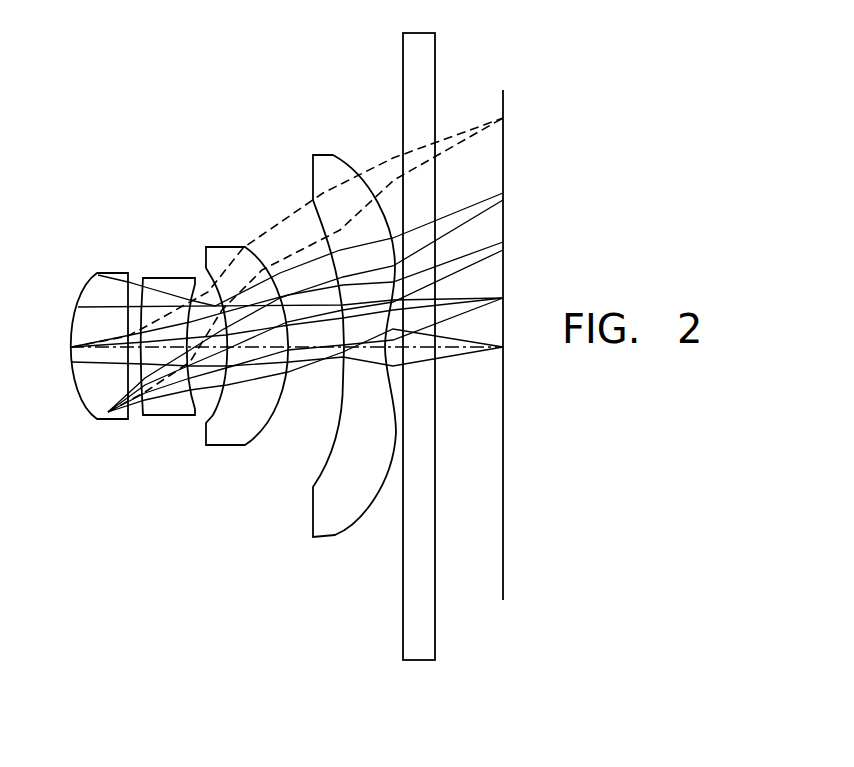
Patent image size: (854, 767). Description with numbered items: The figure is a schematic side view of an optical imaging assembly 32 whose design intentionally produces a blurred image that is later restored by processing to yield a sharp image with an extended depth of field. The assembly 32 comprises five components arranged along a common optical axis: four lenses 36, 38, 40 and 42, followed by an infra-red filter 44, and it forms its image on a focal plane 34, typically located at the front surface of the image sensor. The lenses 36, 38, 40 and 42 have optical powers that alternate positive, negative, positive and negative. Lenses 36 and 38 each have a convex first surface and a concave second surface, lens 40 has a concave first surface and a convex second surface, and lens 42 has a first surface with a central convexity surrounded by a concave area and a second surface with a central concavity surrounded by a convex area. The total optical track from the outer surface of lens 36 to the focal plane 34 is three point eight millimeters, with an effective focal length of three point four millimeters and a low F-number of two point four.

The optical imaging assembly 32 is at (203, 163).
The focal plane 34 is at (505, 513).
The lens 36 is at (113, 421).
The lens 38 is at (166, 417).
The lens 40 is at (228, 447).
The lens 42 is at (327, 538).
The infra-red filter 44 is at (414, 662).